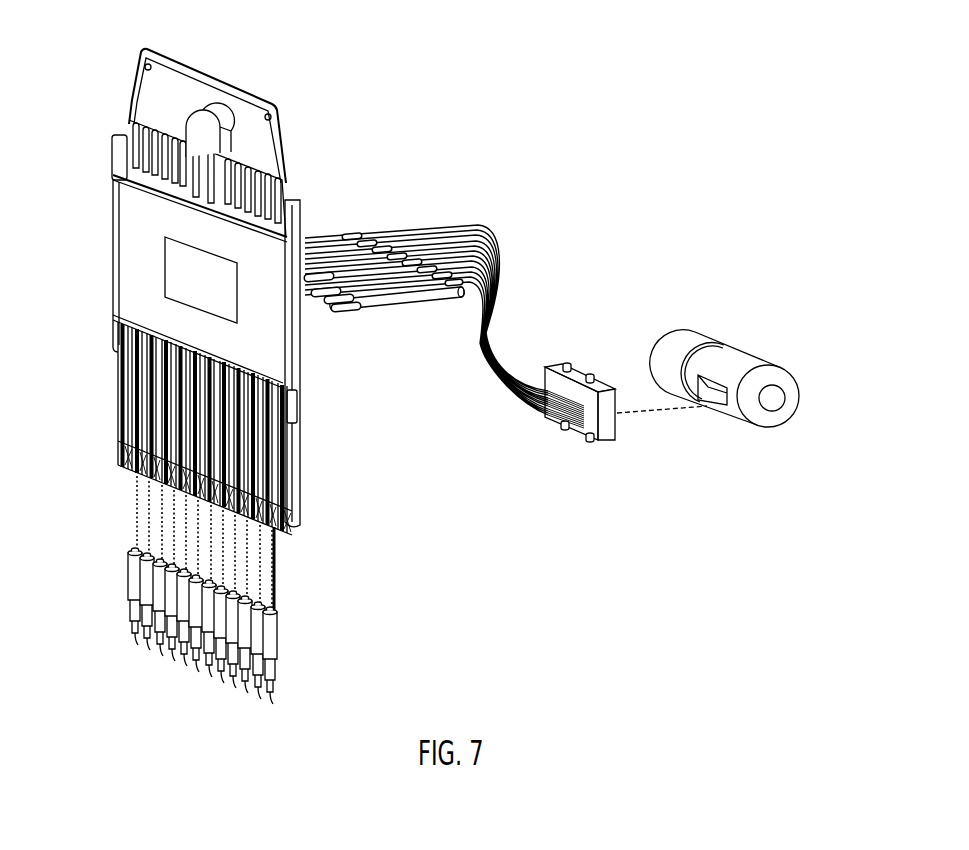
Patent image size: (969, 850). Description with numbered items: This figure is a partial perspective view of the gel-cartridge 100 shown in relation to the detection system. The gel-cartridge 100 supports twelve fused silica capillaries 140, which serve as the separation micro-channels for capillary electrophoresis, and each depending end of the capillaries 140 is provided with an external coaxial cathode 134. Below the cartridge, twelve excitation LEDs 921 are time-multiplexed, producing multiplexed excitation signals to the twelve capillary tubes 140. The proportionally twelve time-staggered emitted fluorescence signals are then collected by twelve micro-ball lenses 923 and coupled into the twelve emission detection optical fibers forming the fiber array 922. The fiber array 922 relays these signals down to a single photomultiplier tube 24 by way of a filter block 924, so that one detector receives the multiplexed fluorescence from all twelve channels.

The gel-cartridge 100 is at (262, 142).
The emission detection optical fibers 922 is at (358, 268).
The micro-ball lenses 923 is at (333, 315).
The filter block 924 is at (582, 423).
The photomultiplier tube 24 is at (700, 338).
The excitation LEDs 921 is at (270, 640).
The external coaxial cathode 134 is at (277, 572).
The capillaries 140 is at (140, 532).